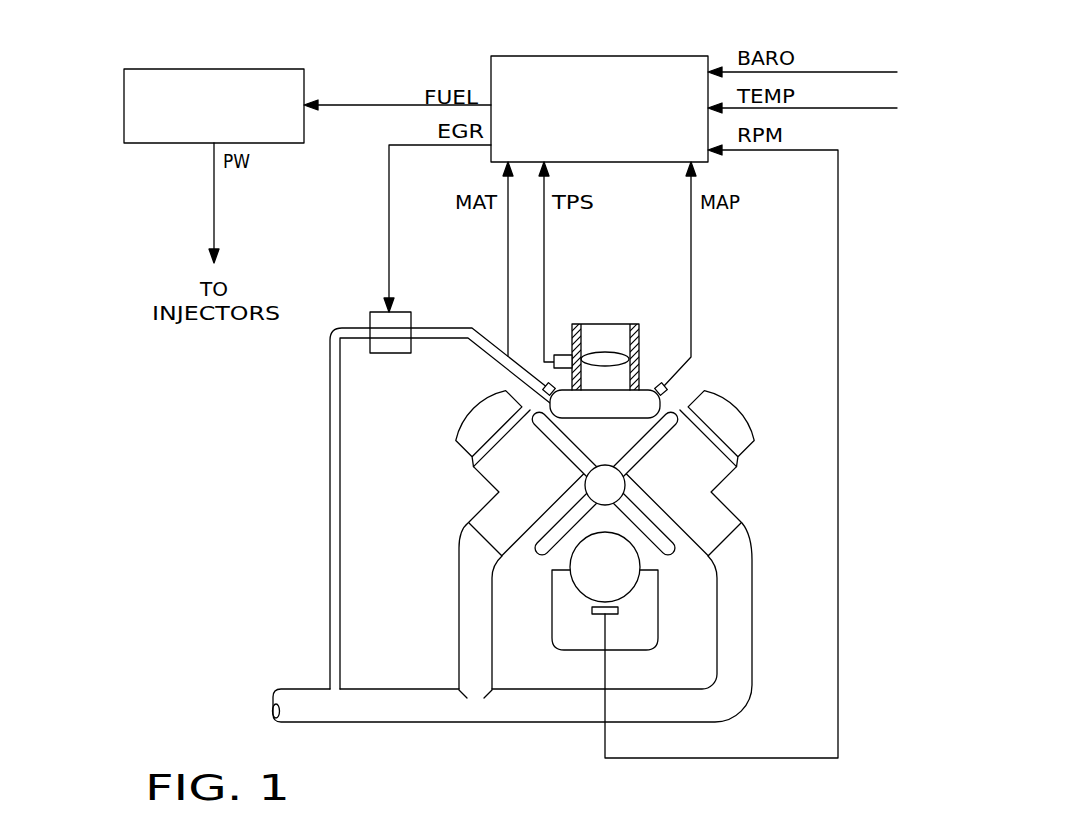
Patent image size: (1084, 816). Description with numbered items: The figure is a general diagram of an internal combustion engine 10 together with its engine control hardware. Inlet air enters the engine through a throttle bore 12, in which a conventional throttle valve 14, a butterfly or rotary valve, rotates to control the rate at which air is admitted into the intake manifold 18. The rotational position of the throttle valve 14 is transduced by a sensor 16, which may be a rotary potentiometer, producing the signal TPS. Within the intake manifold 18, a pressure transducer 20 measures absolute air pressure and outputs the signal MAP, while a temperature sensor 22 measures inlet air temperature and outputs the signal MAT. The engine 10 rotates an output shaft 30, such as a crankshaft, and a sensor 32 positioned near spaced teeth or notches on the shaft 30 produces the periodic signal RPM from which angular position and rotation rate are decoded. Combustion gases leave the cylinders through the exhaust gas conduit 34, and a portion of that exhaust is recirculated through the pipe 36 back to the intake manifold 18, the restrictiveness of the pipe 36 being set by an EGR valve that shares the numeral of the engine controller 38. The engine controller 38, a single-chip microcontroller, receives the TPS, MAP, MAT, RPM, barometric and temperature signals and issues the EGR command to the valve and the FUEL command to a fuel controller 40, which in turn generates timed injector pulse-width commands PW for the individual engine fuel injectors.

The internal combustion engine 10 is at (693, 487).
The throttle bore 12 is at (638, 339).
The throttle valve 14 is at (615, 360).
The sensor 16 is at (560, 353).
The intake manifold 18 is at (597, 400).
The pressure transducer 20 is at (665, 392).
The temperature sensor 22 is at (545, 385).
The output shaft 30 is at (617, 579).
The sensor 32 is at (597, 614).
The exhaust gas conduit 34 is at (737, 628).
The pipe 36 is at (332, 540).
The engine controller 38 is at (528, 72).
The fuel controller 40 is at (147, 85).